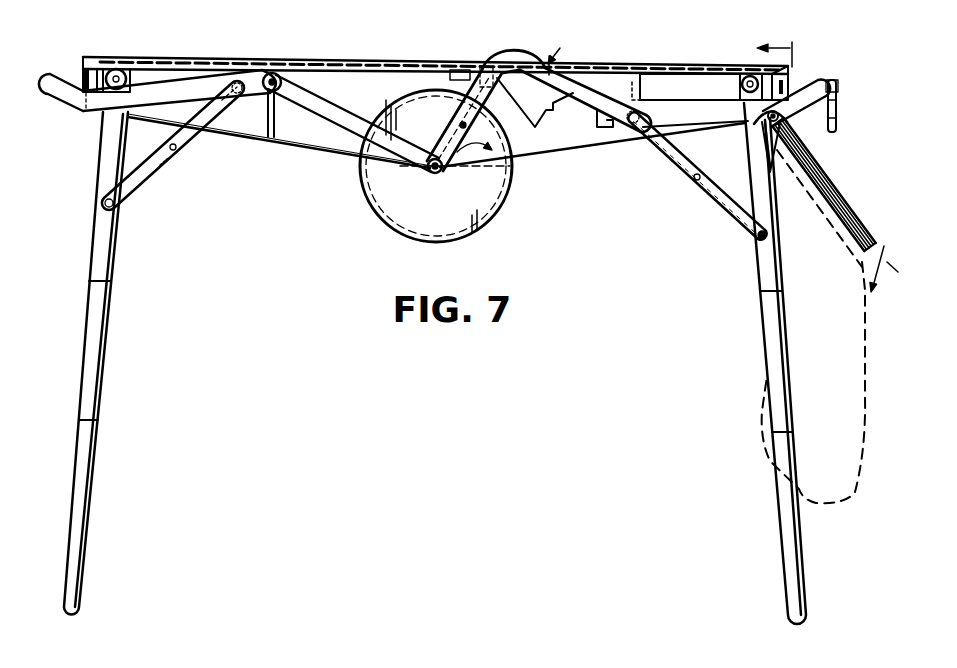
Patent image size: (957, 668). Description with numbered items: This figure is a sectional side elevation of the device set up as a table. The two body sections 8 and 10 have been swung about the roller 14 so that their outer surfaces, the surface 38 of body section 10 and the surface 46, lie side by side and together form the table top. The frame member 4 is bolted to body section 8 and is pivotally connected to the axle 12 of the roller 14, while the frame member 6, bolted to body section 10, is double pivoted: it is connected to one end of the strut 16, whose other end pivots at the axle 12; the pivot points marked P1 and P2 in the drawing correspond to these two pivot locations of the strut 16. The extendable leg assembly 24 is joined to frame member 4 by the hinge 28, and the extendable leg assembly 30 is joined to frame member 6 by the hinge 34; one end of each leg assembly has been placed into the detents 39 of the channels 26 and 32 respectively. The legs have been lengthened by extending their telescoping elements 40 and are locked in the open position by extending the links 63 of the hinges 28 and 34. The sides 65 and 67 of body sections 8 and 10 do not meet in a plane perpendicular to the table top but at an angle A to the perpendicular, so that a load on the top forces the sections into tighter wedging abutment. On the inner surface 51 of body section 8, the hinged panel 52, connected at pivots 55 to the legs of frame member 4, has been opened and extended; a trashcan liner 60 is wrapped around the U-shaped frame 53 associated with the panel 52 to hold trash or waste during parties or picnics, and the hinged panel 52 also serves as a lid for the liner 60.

The frame member 4 is at (559, 46).
The frame member 6 is at (90, 110).
The body section 8 is at (540, 170).
The body section 10 is at (306, 152).
The axle 12 is at (445, 172).
The roller 14 is at (392, 222).
The strut 16 is at (346, 125).
The extendable leg assembly 24 is at (765, 270).
The channel 26 is at (678, 88).
The hinge 28 is at (728, 200).
The extendable leg assembly 30 is at (110, 258).
The channel 32 is at (172, 85).
The hinge 34 is at (225, 120).
The outer surface 38 is at (326, 62).
The detent 39 is at (118, 70).
The telescoping elements 40 is at (113, 283).
The surface 46 is at (605, 68).
The inner surface 51 is at (600, 152).
The hinged panel 52 is at (840, 195).
The U-shaped frame 53 is at (840, 225).
The pivots 55 is at (786, 123).
The trashcan liner 60 is at (834, 492).
The links 63 is at (193, 165).
The side 65 is at (563, 142).
The side 67 is at (283, 137).
The angle A is at (475, 135).
The pivot point P1 is at (435, 175).
The pivot point P2 is at (272, 72).